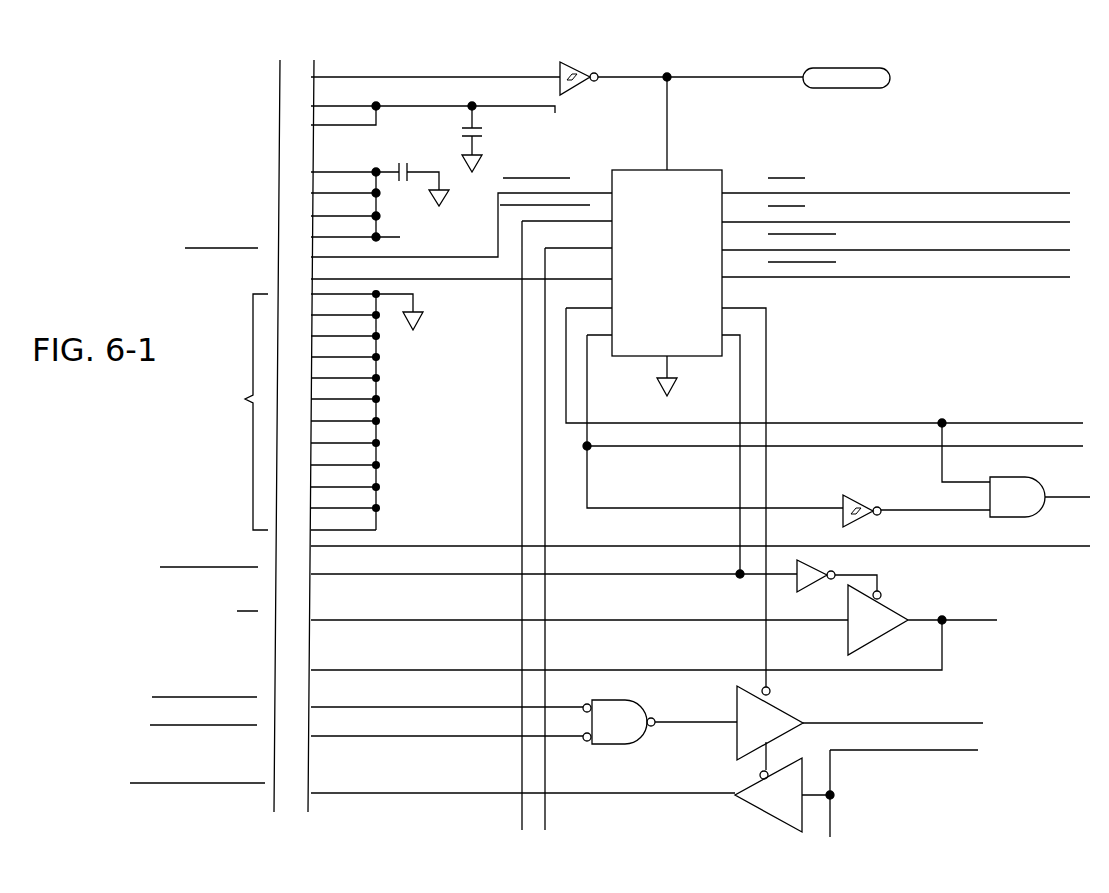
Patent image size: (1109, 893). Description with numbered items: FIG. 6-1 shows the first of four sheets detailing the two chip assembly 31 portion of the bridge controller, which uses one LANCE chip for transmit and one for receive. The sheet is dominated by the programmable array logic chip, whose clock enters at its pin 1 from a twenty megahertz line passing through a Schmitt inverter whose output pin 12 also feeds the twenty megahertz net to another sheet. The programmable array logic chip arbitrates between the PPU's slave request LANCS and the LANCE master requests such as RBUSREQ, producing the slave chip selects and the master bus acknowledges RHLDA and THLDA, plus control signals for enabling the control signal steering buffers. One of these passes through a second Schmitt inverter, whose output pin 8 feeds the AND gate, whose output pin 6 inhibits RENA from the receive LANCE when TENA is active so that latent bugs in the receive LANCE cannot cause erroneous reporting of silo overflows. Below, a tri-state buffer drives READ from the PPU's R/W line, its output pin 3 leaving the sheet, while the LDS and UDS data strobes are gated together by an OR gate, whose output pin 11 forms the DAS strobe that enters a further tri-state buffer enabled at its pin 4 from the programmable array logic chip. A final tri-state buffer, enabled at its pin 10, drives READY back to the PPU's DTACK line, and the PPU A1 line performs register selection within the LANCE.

The two chip assembly 31 is at (722, 50).
The PAL 16R6A clock input pin 1 is at (680, 216).
The LS14 inverter output pin 12 is at (467, 67).
The I5D4 LS14 inverter output pin 8 is at (905, 489).
The I5E1 LS08 AND gate output pin 6 is at (1029, 495).
The I5C9 LS125 buffer output pin 3 is at (912, 599).
The LS32 gate output pin 11 is at (524, 723).
The LS125 buffer enable pin 4 is at (821, 724).
The LS125 DTACK buffer enable pin 10 is at (821, 789).